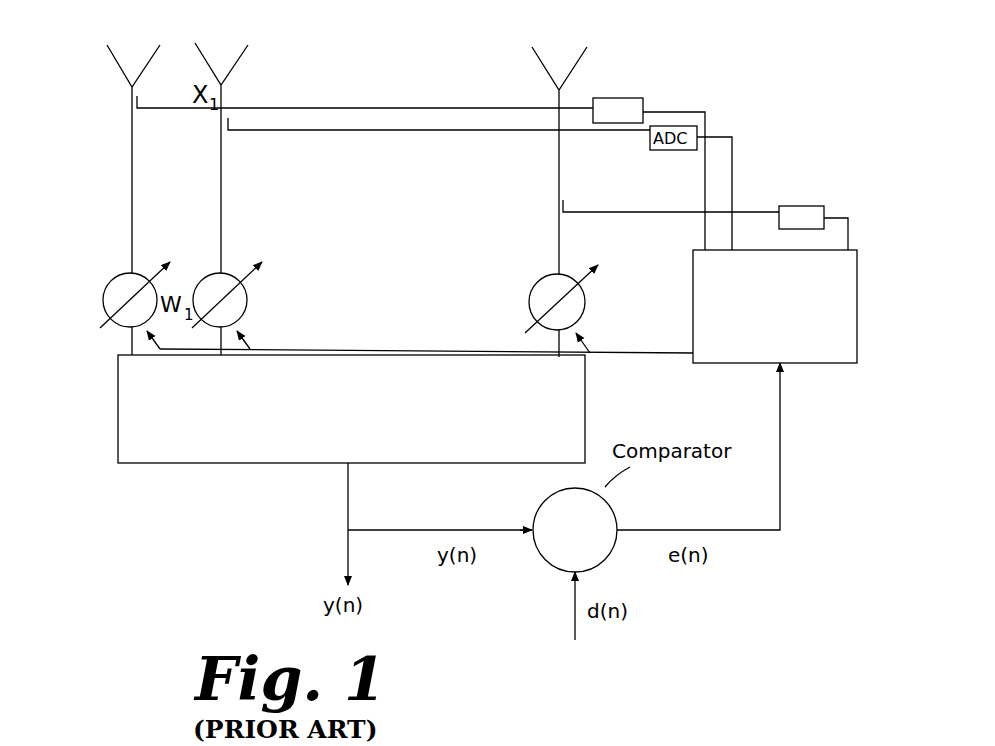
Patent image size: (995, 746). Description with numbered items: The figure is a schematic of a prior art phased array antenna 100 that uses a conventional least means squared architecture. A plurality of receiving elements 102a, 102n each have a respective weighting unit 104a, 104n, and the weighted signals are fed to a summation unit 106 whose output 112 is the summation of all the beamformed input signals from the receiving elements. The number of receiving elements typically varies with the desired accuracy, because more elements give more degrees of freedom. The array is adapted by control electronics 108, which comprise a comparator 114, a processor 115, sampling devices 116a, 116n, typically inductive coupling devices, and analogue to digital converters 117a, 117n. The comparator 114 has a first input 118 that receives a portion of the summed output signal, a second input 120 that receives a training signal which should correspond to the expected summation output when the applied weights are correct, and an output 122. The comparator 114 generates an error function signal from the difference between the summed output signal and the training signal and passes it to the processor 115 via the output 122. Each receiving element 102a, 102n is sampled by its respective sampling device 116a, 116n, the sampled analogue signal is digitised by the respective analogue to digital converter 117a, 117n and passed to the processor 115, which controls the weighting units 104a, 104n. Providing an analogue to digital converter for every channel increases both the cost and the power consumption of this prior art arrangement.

The phased array antenna 100 is at (165, 490).
The receiving element 102a is at (130, 70).
The receiving element 102n is at (570, 60).
The weighting unit 104a is at (115, 290).
The weighting unit 104n is at (530, 290).
The summation unit 106 is at (140, 428).
The control electronics 108 is at (757, 548).
The output 112 is at (345, 465).
The comparator 114 is at (550, 512).
The processor 115 is at (815, 345).
The sampling device 116a is at (145, 115).
The sampling device 116n is at (557, 205).
The analogue to digital converter 117a is at (632, 97).
The analogue to digital converter 117n is at (800, 205).
The first input 118 is at (525, 533).
The second input 120 is at (580, 575).
The output 122 is at (620, 522).